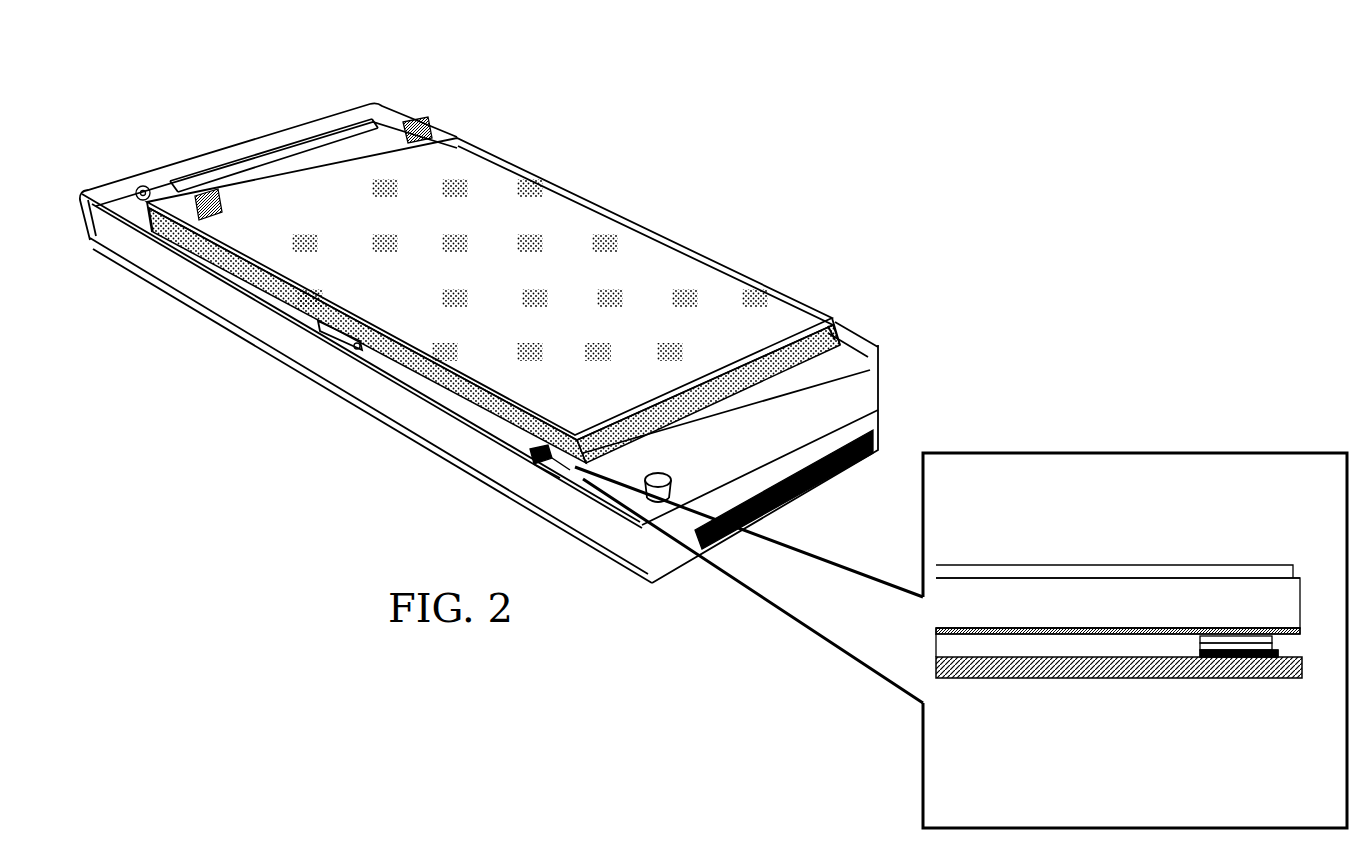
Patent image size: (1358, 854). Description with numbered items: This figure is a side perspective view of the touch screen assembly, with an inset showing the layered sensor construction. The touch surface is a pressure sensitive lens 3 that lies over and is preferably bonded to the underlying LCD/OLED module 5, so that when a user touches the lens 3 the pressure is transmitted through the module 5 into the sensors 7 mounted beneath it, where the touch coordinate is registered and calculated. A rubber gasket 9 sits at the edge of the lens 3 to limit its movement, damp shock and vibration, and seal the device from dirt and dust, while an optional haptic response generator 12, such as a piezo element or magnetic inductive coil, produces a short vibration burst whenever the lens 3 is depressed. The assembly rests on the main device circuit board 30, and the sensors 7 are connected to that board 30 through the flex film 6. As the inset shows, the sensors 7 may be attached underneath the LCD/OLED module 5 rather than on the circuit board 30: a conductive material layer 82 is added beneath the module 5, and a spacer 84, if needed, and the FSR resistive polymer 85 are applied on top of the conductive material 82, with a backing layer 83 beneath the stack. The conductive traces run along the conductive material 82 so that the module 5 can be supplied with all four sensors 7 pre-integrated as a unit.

The pressure sensitive lens 3 is at (468, 143).
The LCD/OLED module 5 is at (251, 262).
The flex film 6 is at (250, 186).
The sensor 7 is at (538, 456).
The rubber gasket 9 is at (829, 314).
The haptic response generator 12 is at (330, 347).
The main device circuit board 30 is at (141, 226).
The conductive material layer 82 is at (1039, 633).
The base layer 83 is at (958, 678).
The spacer 84 is at (1272, 638).
The FSR resistive polymer 85 is at (1302, 667).